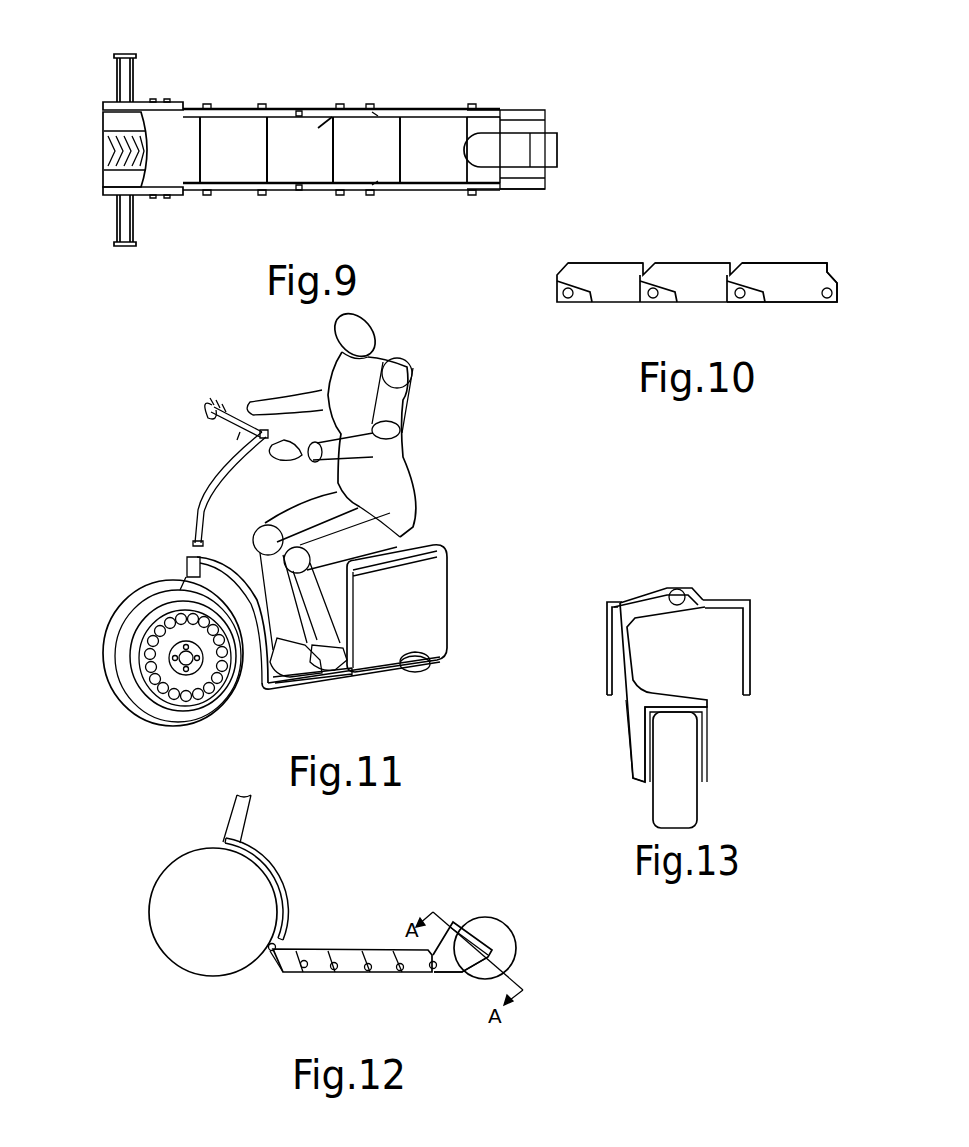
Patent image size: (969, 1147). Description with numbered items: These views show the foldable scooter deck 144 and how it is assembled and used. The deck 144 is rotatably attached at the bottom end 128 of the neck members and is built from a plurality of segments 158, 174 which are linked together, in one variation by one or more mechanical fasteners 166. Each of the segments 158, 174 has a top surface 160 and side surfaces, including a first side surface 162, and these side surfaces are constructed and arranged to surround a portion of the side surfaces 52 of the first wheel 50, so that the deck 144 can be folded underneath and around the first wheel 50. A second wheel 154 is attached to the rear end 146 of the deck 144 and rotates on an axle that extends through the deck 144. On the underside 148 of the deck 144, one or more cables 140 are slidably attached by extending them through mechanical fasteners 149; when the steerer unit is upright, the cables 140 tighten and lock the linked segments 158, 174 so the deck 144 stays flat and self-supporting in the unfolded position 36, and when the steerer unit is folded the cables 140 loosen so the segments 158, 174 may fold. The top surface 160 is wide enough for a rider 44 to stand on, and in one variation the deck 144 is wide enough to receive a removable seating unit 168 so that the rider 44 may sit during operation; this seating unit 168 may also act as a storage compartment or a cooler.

In FIG. 9, the unfolded position 36 is at (546, 34).
In FIG. 11, the unfolded position 36 is at (424, 448).
In FIG. 12, the unfolded position 36 is at (430, 836).
In FIG. 11, the rider 44 is at (375, 365).
In FIG. 9, the first wheel 50 is at (110, 122).
In FIG. 11, the first wheel 50 is at (125, 663).
In FIG. 12, the first wheel 50 is at (196, 872).
In FIG. 9, the side surfaces of the first wheel 52 is at (104, 112).
In FIG. 11, the bottom end 128 is at (279, 694).
In FIG. 12, the bottom end 128 is at (294, 937).
In FIG. 9, the cables 140 is at (418, 113).
In FIG. 9, the deck 144 is at (447, 130).
In FIG. 10, the deck 144 is at (776, 262).
In FIG. 11, the deck 144 is at (350, 674).
In FIG. 12, the deck 144 is at (375, 950).
In FIG. 13, the deck 144 is at (732, 600).
In FIG. 9, the rear end 146 is at (517, 189).
In FIG. 12, the rear end 146 is at (461, 965).
In FIG. 13, the rear end 146 is at (626, 742).
In FIG. 9, the underside 148 is at (425, 152).
In FIG. 9, the mechanical fasteners 149 is at (302, 111).
In FIG. 9, the second wheel 154 is at (525, 148).
In FIG. 11, the second wheel 154 is at (428, 668).
In FIG. 12, the second wheel 154 is at (492, 928).
In FIG. 13, the second wheel 154 is at (688, 787).
In FIG. 9, the segments 158 is at (232, 130).
In FIG. 10, the segments 158 is at (616, 258).
In FIG. 12, the segments 158 is at (347, 962).
In FIG. 13, the segments 158 is at (648, 604).
In FIG. 9, the top surface 160 is at (216, 132).
In FIG. 10, the top surface 160 is at (586, 262).
In FIG. 9, the first side surface 162 is at (246, 112).
In FIG. 10, the first side surface 162 is at (718, 262).
In FIG. 9, the mechanical fasteners 166 is at (206, 106).
In FIG. 10, the mechanical fasteners 166 is at (742, 298).
In FIG. 12, the mechanical fasteners 166 is at (370, 970).
In FIG. 11, the removable seating unit 168 is at (423, 582).
In FIG. 9, the segments 174 is at (340, 116).